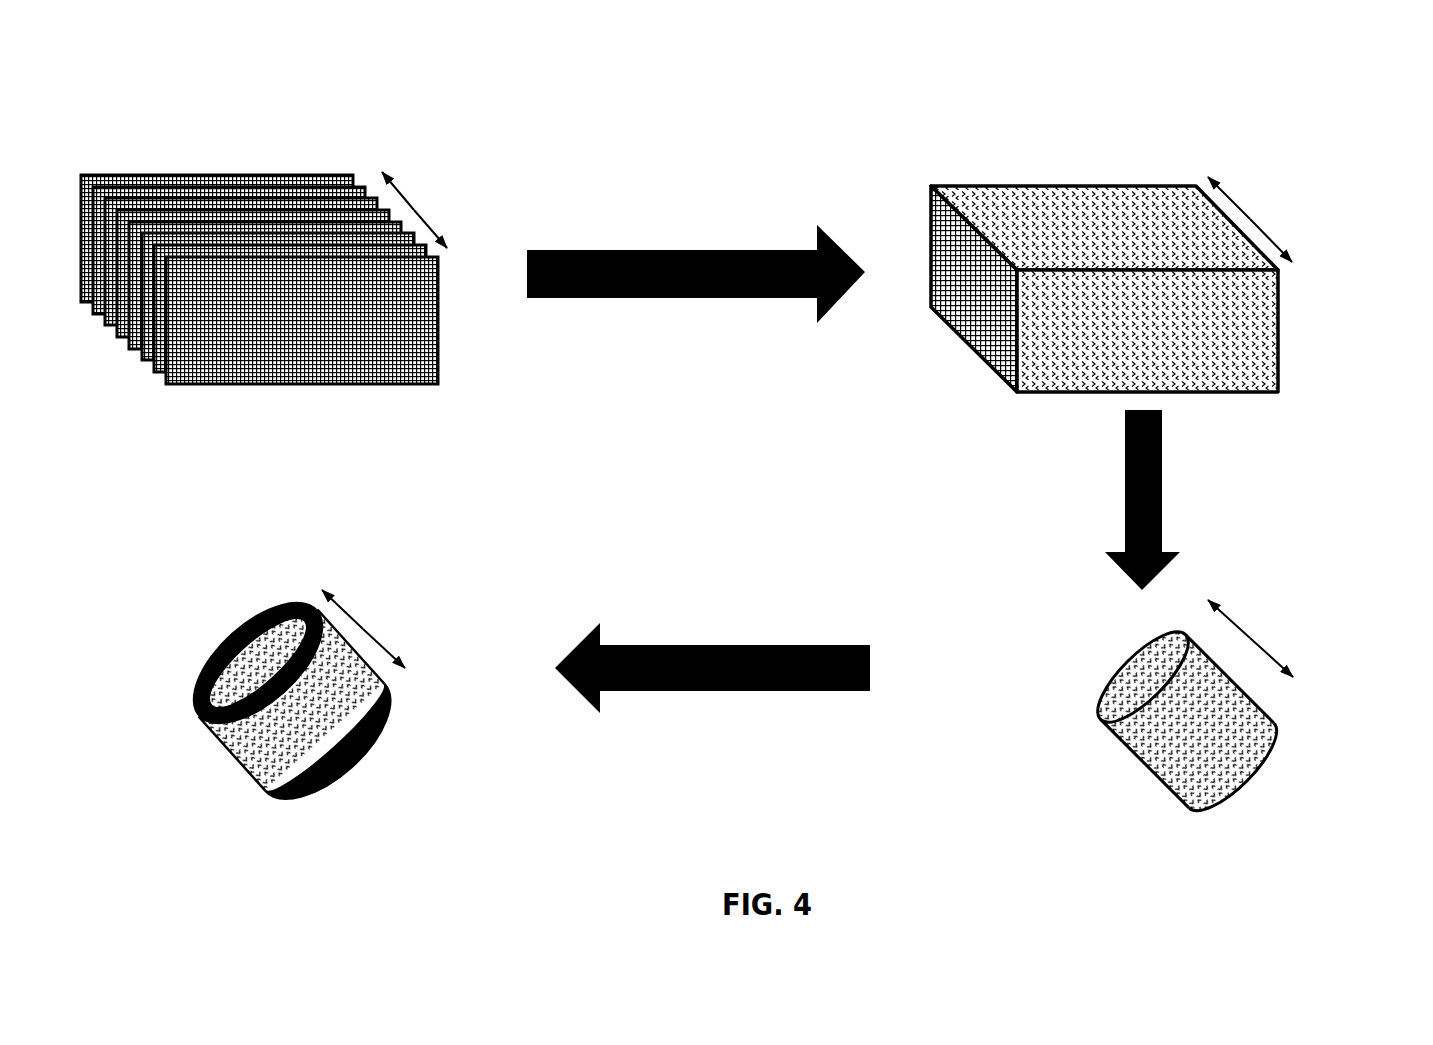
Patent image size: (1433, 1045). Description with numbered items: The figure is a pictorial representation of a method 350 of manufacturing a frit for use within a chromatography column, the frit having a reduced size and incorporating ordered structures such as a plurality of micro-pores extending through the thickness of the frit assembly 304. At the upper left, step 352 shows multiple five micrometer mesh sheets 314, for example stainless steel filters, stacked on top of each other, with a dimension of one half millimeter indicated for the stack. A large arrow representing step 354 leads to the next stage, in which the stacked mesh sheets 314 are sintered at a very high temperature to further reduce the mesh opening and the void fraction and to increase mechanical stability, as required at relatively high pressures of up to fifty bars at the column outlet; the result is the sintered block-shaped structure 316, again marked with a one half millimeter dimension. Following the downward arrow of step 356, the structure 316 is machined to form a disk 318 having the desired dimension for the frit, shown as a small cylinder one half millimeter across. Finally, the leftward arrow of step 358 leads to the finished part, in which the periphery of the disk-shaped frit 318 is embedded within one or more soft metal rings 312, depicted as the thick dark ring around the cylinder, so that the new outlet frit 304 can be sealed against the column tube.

The method 350 is at (176, 63).
The step 352 is at (268, 150).
The mesh sheets 314 is at (190, 175).
The step 354 is at (688, 235).
The structure 316 is at (1182, 175).
The step 356 is at (1220, 474).
The disk 318 is at (1312, 677).
The step 358 is at (721, 720).
The soft metal rings 312 is at (186, 693).
The frit assembly 304 is at (190, 750).